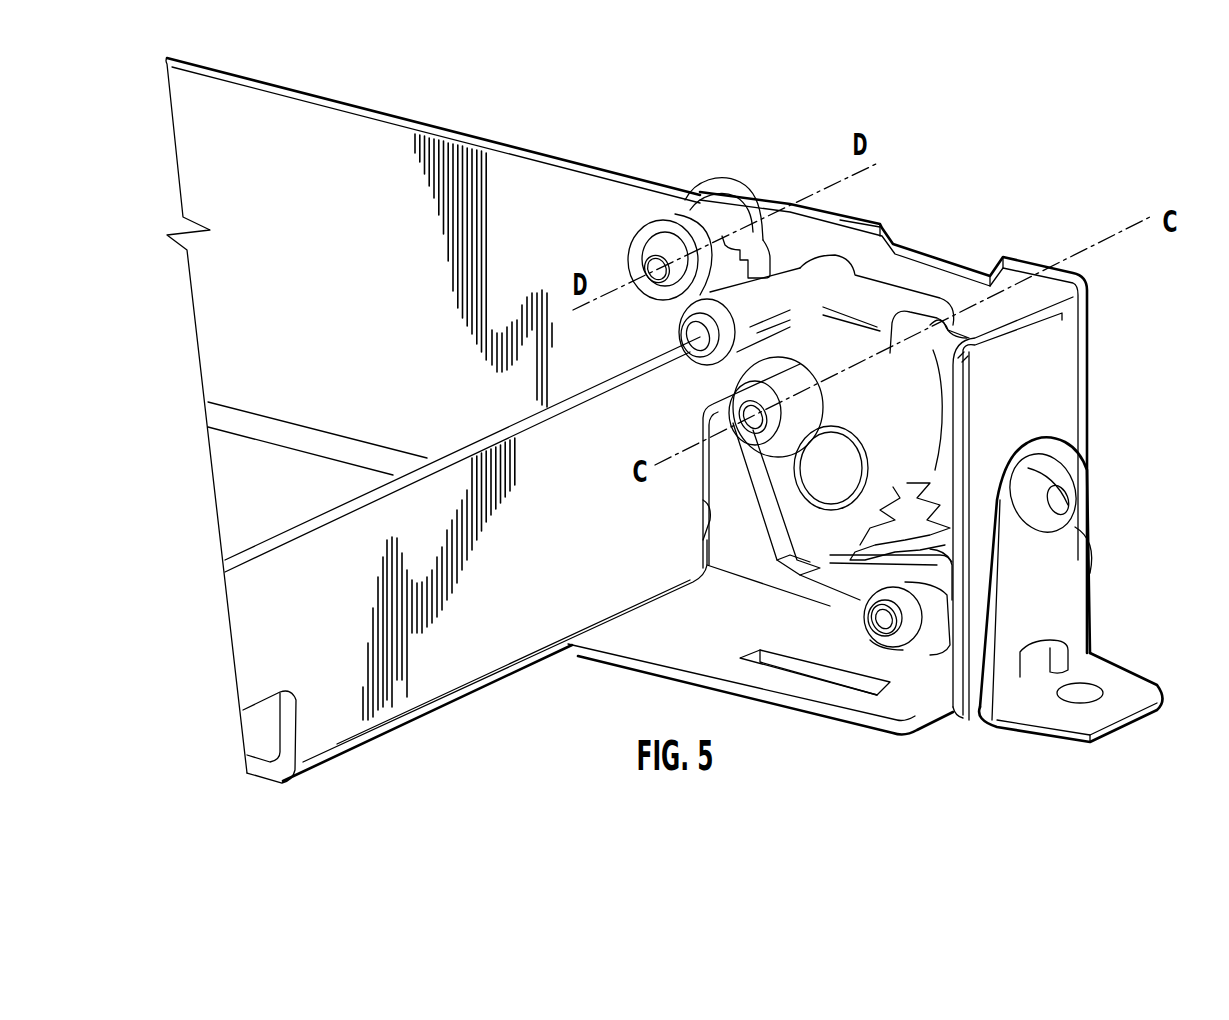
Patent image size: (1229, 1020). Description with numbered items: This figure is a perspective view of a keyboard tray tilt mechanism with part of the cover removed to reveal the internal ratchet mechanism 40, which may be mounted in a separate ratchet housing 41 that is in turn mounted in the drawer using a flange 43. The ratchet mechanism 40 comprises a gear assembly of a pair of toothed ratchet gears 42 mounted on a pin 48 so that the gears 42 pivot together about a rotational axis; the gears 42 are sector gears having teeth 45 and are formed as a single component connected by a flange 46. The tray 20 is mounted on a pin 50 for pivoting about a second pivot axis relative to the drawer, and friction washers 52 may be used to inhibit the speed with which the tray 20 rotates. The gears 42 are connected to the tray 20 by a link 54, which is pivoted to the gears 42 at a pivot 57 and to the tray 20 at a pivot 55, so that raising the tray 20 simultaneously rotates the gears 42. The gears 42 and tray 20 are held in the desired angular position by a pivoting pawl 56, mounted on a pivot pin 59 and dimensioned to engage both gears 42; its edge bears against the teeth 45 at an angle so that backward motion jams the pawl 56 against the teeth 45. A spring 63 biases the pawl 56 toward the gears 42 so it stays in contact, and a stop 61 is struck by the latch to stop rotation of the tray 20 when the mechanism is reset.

The tray 20 is at (468, 138).
The ratchet mechanism 40 is at (1027, 222).
The ratchet housing 41 is at (1087, 362).
The toothed ratchet gears 42 is at (947, 475).
The flange 43 is at (1143, 667).
The teeth 45 is at (913, 494).
The flange 46 is at (868, 287).
The pin 48 is at (770, 391).
The pin 50 is at (657, 247).
The friction washers 52 is at (737, 193).
The link 54 is at (755, 553).
The pivot 55 is at (687, 523).
The pawl 56 is at (927, 650).
The pivot 57 is at (835, 457).
The pivot pin 59 is at (890, 650).
The stop 61 is at (807, 272).
The spring 63 is at (930, 549).